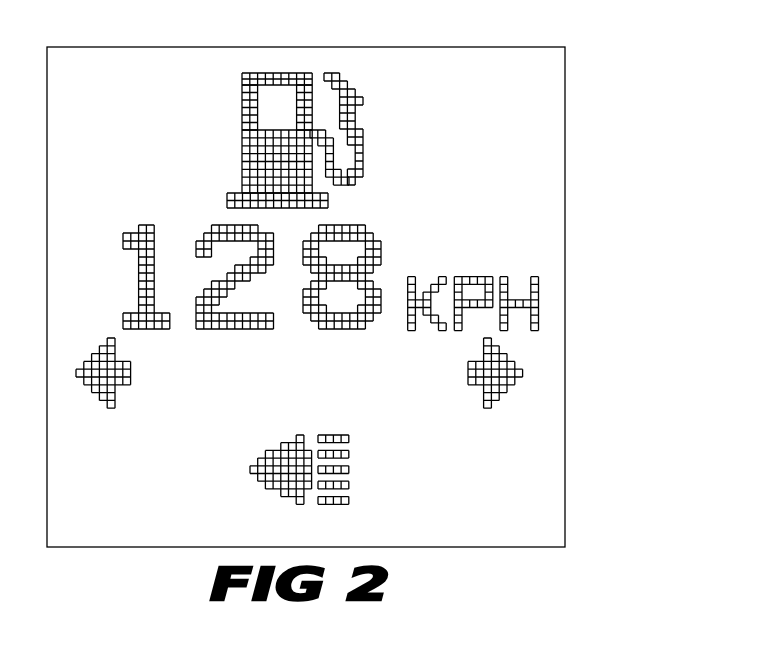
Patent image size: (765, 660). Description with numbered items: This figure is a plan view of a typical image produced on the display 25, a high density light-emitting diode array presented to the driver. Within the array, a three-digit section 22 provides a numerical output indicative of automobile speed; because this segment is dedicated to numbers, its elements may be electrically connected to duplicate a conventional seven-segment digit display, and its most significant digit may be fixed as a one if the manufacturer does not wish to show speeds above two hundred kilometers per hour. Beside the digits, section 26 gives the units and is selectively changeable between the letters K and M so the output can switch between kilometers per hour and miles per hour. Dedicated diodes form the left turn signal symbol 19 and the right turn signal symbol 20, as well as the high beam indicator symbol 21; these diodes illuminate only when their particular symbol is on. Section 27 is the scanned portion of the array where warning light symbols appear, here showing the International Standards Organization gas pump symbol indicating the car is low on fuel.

The display 25 is at (566, 46).
The scanned section 27 is at (364, 179).
The three-digit section 22 is at (172, 333).
The units section 26 is at (406, 331).
The left turn signal symbol 19 is at (117, 406).
The right turn signal symbol 20 is at (483, 407).
The high beam indicator symbol 21 is at (251, 473).